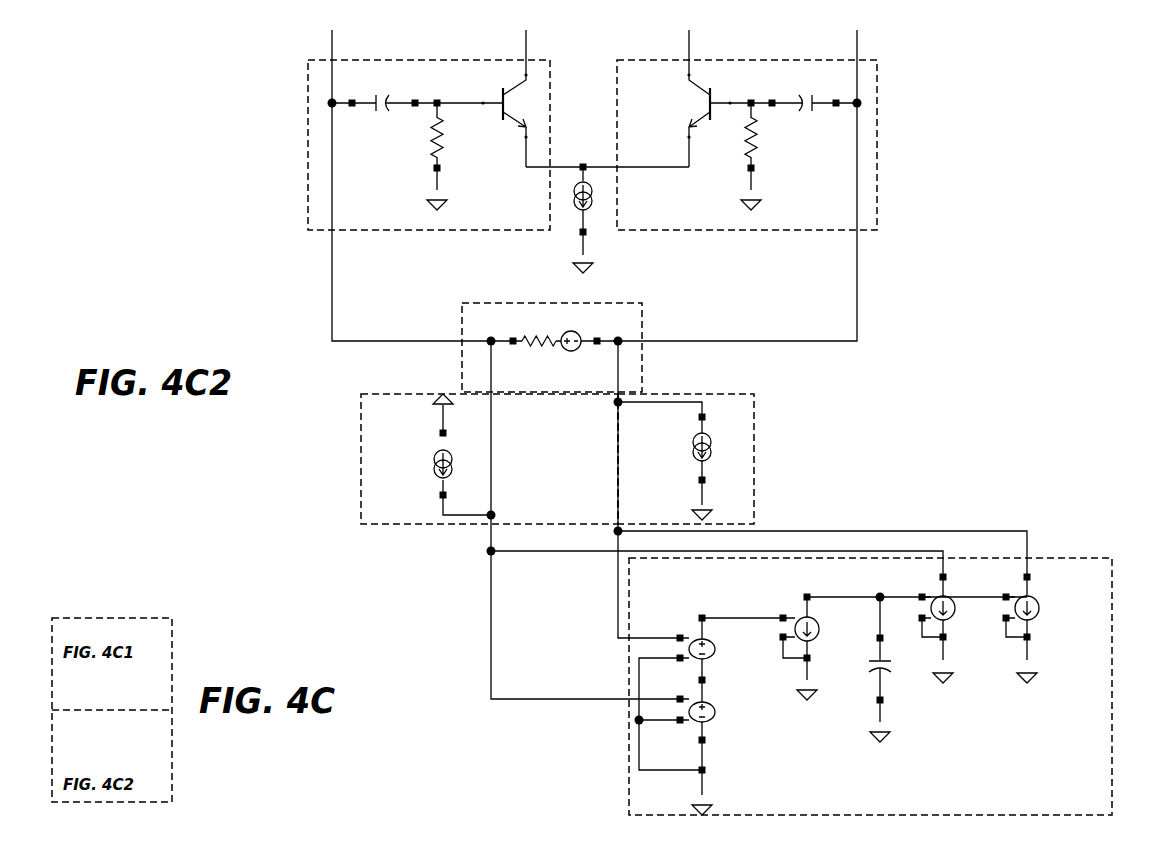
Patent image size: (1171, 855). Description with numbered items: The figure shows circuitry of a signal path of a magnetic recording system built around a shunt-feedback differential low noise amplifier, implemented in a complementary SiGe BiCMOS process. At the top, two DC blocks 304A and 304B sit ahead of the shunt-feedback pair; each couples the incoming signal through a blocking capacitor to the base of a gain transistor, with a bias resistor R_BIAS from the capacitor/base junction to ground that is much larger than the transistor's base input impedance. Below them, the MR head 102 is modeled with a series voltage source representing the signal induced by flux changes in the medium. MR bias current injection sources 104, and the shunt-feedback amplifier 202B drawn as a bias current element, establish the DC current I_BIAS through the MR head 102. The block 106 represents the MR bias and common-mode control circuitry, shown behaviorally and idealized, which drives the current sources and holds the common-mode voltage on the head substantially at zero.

The DC block 304A is at (323, 230).
The DC block 304B is at (862, 233).
The magnetoresistive (MR) head 102 is at (608, 303).
The shunt-feedback amplifier 202B is at (388, 394).
The current source 104 is at (728, 394).
The MR bias control circuitry 106 is at (1048, 558).